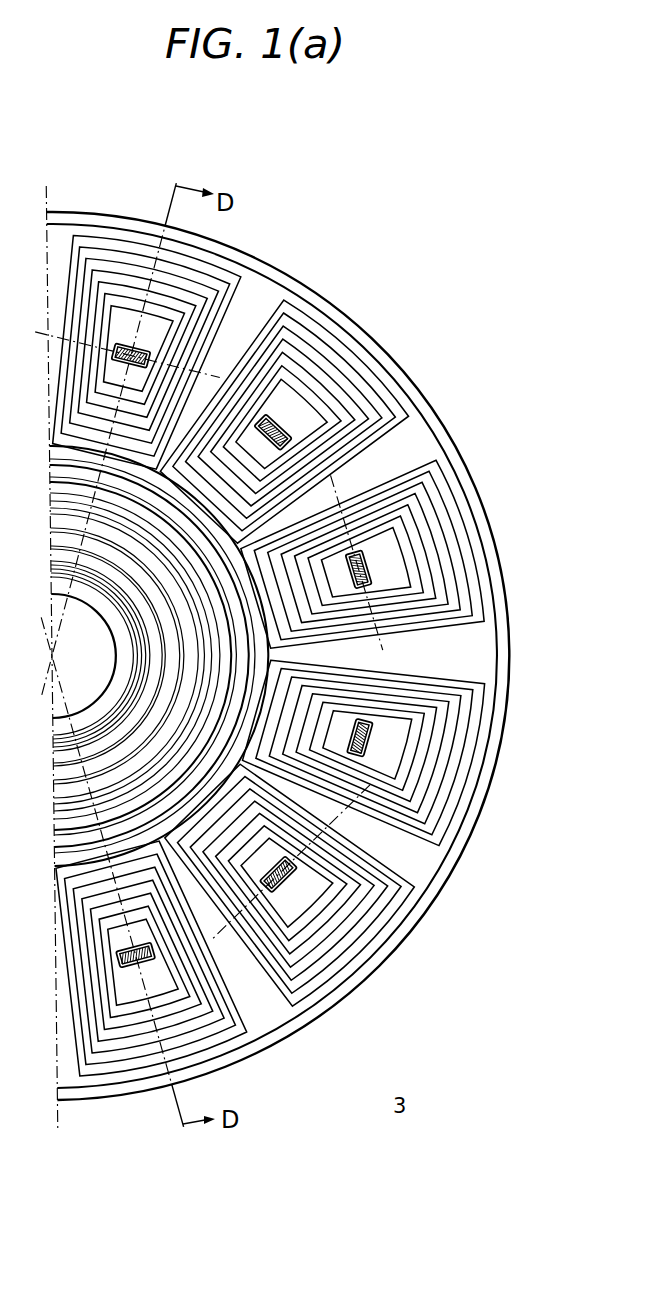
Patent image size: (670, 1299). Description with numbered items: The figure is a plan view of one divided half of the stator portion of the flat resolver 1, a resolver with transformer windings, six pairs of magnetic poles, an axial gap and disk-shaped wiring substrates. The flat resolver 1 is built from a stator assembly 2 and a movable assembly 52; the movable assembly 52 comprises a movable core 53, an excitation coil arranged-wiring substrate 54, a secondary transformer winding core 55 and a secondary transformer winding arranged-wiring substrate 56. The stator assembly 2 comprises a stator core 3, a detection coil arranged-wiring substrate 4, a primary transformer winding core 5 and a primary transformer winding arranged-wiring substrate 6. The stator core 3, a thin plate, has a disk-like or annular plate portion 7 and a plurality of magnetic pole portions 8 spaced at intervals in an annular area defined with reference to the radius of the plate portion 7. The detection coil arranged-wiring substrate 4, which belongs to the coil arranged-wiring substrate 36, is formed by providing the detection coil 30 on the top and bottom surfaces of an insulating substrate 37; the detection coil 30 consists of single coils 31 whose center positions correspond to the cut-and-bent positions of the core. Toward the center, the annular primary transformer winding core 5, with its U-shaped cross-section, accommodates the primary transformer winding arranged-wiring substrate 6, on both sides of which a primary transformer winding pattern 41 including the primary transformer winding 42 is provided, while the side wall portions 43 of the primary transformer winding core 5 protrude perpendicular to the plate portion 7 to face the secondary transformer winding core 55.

The flat resolver 1 is at (280, 209).
The stator assembly 2 is at (390, 1093).
The stator core 3 is at (296, 268).
The detection coil arranged-wiring substrate 4 is at (258, 743).
The primary transformer winding core 5 is at (281, 955).
The primary transformer winding arranged-wiring substrate 6 is at (215, 1013).
The plate portion 7 is at (316, 303).
The magnetic pole portions 8 is at (286, 424).
The detection coil 30 is at (428, 456).
The single coils 31 is at (380, 385).
The coil arranged-wiring substrate 36 is at (314, 1115).
The insulating substrate 37 is at (446, 471).
The primary transformer winding pattern 41 is at (50, 745).
The primary transformer winding 42 is at (72, 540).
The side wall portions 43 is at (64, 584).
The movable assembly 52 is at (467, 1093).
The movable core 53 is at (421, 918).
The excitation coil arranged-wiring substrate 54 is at (377, 1012).
The secondary transformer winding core 55 is at (305, 1055).
The secondary transformer winding arranged-wiring substrate 56 is at (377, 805).